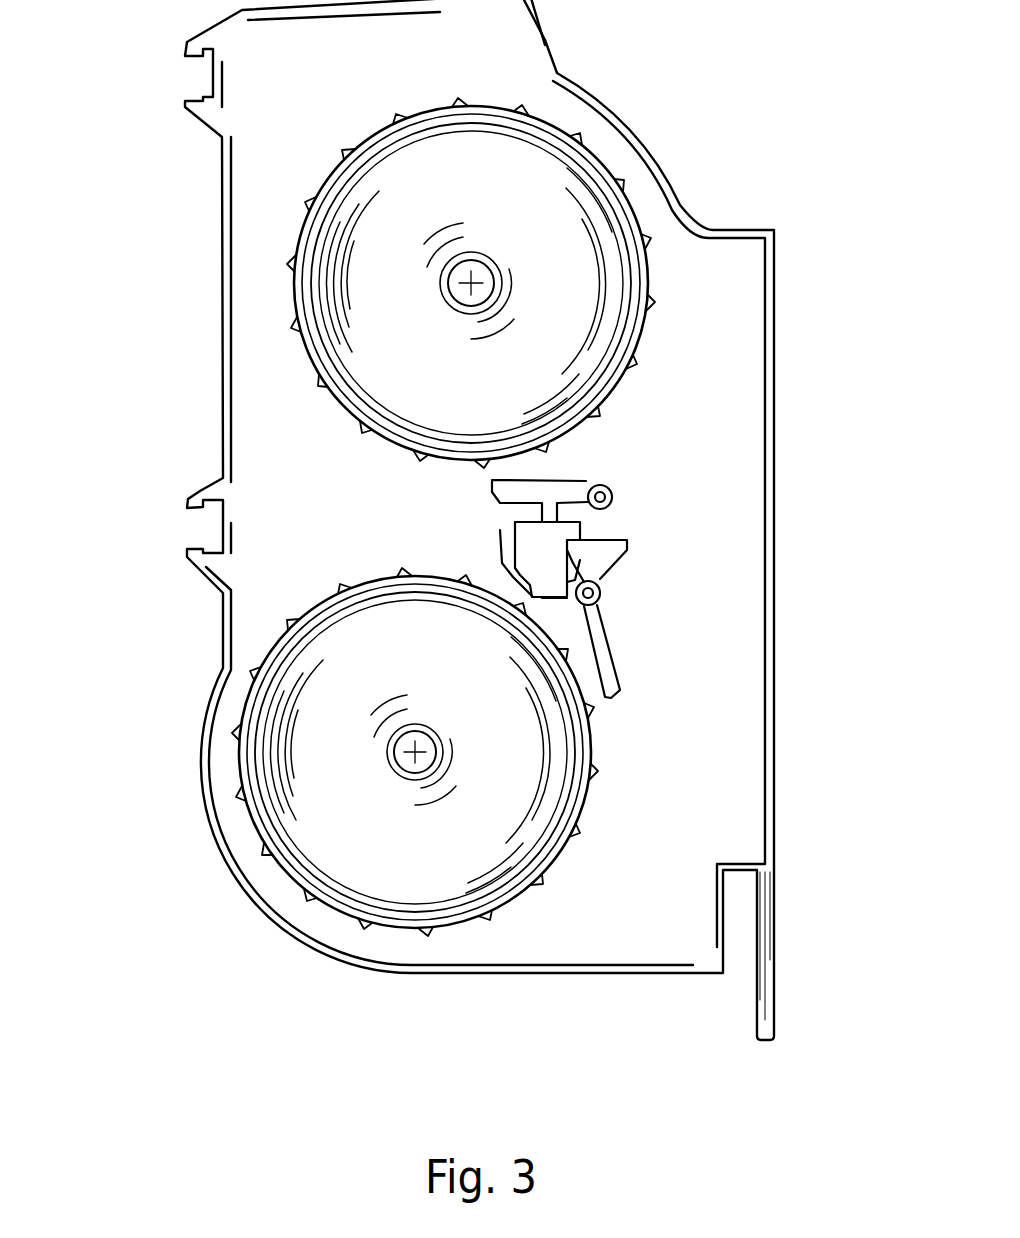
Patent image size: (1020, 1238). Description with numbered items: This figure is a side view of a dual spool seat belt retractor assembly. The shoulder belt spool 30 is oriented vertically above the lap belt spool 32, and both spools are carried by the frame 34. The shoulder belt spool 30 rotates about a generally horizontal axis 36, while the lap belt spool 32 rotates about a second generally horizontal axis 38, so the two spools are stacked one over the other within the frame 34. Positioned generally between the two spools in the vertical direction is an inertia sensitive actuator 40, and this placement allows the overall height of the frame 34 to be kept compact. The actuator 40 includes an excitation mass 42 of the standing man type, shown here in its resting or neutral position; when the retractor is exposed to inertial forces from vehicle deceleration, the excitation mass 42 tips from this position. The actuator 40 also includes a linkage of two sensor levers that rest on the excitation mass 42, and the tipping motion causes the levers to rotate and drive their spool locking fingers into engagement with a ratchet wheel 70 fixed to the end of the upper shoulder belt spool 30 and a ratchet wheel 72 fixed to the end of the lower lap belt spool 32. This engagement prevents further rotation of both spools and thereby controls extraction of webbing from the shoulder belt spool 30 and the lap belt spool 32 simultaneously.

The shoulder belt spool 30 is at (597, 157).
The lap belt spool 32 is at (597, 737).
The frame 34 is at (222, 365).
The axis 36 is at (466, 282).
The axis 38 is at (420, 762).
The inertia sensitive actuator 40 is at (466, 561).
The excitation mass 42 is at (513, 522).
The ratchet wheel 70 is at (618, 378).
The ratchet wheel 72 is at (290, 877).